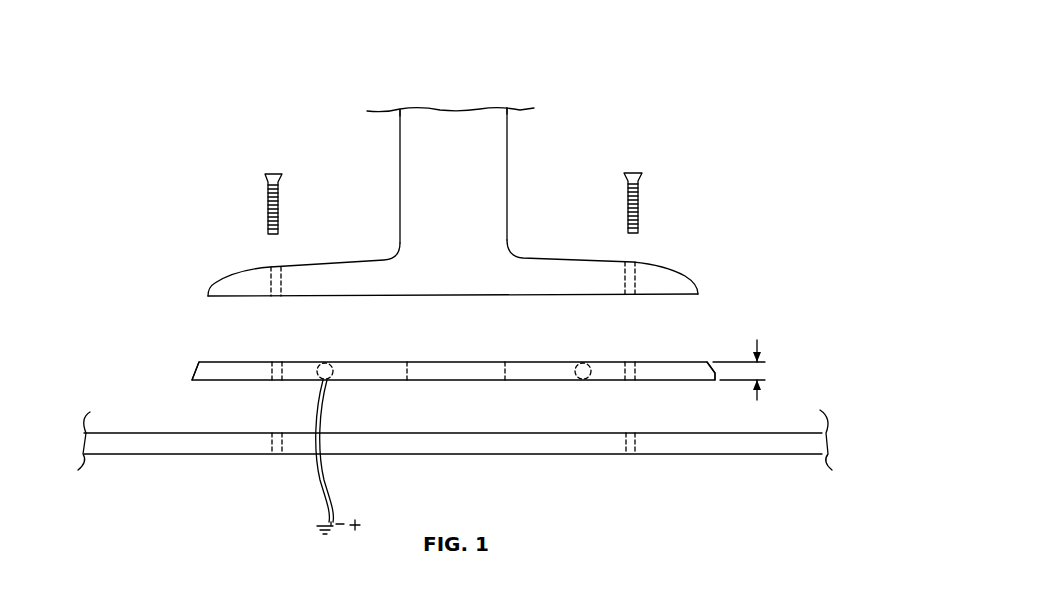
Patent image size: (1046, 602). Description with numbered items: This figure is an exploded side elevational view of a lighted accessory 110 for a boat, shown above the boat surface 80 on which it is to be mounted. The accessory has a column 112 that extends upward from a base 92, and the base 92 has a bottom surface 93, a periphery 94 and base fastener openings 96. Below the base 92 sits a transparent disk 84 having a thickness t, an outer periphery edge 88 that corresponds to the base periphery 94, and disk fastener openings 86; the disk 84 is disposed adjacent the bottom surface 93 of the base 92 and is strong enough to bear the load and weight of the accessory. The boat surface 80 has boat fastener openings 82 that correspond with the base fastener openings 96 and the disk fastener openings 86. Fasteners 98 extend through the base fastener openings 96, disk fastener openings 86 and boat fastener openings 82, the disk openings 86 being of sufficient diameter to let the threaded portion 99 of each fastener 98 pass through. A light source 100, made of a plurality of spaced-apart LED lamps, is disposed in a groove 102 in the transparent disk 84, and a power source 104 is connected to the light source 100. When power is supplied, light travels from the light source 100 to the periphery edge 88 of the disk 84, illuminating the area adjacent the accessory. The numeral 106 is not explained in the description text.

The boat surface 80 is at (141, 447).
The boat fastener openings 82 is at (290, 445).
The transparent disk 84 is at (246, 380).
The disk fastener openings 86 is at (640, 372).
The outer periphery edge 88 is at (197, 370).
The base 92 is at (658, 272).
The bottom surface 93 is at (666, 297).
The periphery 94 is at (207, 284).
The base fastener openings 96 is at (263, 289).
The fasteners 98 is at (270, 164).
The threaded portion 99 is at (268, 206).
The light source 100 is at (323, 362).
The groove 102 is at (333, 372).
The power source 104 is at (335, 537).
The conductive wire 106 is at (409, 379).
The lighted accessory 110 is at (637, 90).
The column 112 is at (427, 152).